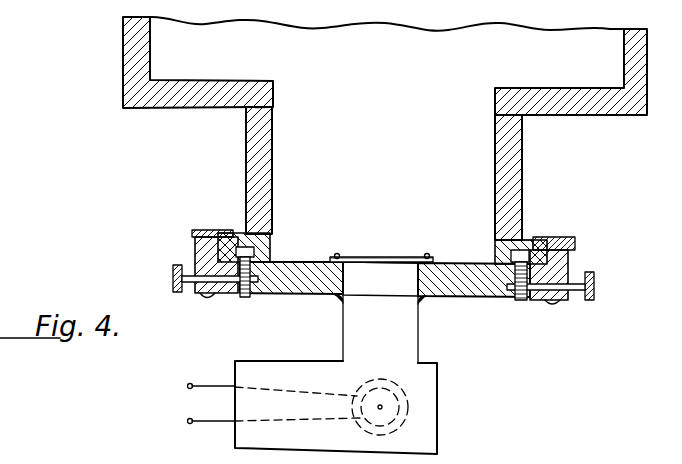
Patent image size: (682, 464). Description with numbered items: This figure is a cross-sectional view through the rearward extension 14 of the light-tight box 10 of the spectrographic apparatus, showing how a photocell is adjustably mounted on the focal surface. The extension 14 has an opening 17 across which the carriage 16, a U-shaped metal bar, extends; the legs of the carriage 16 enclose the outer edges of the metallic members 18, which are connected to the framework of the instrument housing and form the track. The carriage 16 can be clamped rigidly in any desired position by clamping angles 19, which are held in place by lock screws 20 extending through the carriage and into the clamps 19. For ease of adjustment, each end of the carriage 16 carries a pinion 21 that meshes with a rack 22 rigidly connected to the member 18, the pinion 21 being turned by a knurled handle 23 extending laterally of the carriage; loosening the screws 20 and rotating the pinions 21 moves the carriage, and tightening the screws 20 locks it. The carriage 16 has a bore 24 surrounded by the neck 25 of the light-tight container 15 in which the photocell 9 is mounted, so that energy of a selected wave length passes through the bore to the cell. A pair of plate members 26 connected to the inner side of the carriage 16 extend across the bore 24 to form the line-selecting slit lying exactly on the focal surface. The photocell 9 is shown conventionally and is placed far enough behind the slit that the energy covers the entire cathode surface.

The photocell 9 is at (408, 401).
The light-tight box 10 is at (150, 53).
The rearward extension 14 is at (522, 160).
The light-tight container 15 is at (437, 440).
The carriage 16 is at (490, 300).
The opening 17 is at (330, 266).
The metallic member 18 is at (235, 234).
The clamping angle 19 is at (201, 231).
The lock screw 20 is at (214, 301).
The pinion 21 is at (246, 300).
The rack 22 is at (258, 252).
The knurled handle 23 is at (178, 265).
The bore 24 is at (394, 287).
The neck 25 is at (343, 322).
The plate member 26 is at (385, 258).